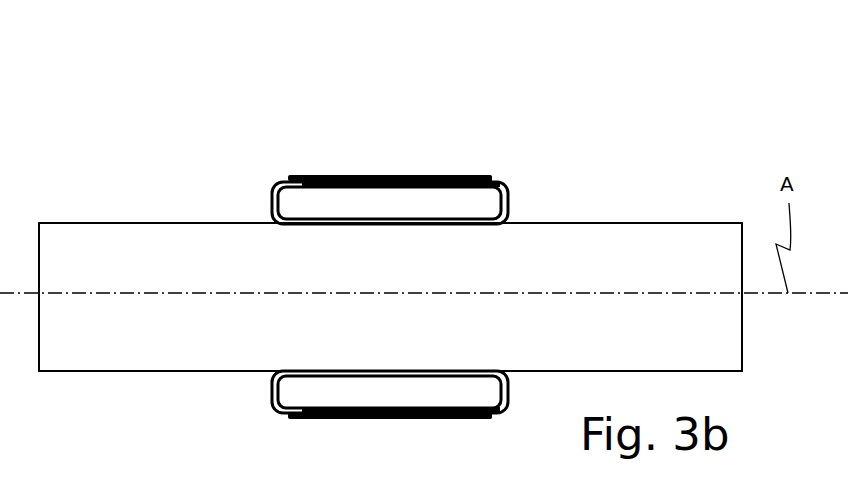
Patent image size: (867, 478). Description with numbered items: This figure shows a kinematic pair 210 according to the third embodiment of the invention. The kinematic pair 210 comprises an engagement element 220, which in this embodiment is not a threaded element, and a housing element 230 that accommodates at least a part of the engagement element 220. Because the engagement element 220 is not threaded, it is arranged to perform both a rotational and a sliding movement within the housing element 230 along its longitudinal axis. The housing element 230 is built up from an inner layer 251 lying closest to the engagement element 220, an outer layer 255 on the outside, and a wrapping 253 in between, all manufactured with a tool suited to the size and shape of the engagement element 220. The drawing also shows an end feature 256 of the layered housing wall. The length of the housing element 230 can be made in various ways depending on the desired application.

The kinematic pair 210 is at (424, 230).
The engagement element 220 is at (626, 223).
The housing element 230 is at (366, 256).
The inner layer 251 is at (332, 222).
The wrapping 253 is at (452, 197).
The outer layer 255 is at (392, 175).
The plate end 256 is at (483, 174).